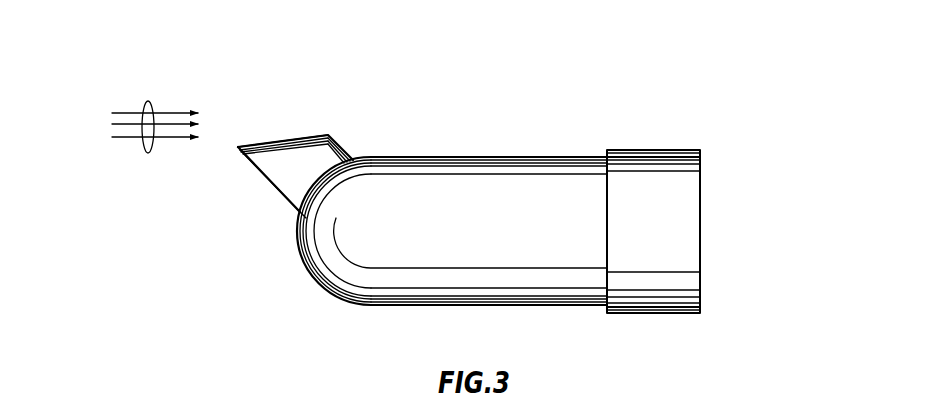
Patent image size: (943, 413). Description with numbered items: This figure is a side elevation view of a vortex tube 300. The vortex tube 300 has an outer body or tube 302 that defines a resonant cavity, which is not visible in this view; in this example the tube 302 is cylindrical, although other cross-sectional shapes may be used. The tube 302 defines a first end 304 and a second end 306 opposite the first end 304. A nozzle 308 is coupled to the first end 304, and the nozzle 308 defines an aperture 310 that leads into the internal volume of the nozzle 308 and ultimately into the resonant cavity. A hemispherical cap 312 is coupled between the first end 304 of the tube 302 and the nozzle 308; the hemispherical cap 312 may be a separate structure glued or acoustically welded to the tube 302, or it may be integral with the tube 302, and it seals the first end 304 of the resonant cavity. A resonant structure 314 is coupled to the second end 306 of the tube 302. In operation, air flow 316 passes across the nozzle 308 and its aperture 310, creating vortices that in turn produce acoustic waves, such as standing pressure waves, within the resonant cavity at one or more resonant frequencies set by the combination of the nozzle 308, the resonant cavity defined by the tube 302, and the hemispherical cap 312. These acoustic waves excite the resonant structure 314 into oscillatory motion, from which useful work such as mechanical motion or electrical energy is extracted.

The vortex tube 300 is at (762, 162).
The tube 302 is at (483, 158).
The first end 304 is at (359, 313).
The second end 306 is at (600, 311).
The nozzle 308 is at (288, 150).
The aperture 310 is at (306, 126).
The hemispherical cap 312 is at (331, 245).
The resonant structure 314 is at (660, 150).
The air flow 316 is at (148, 153).